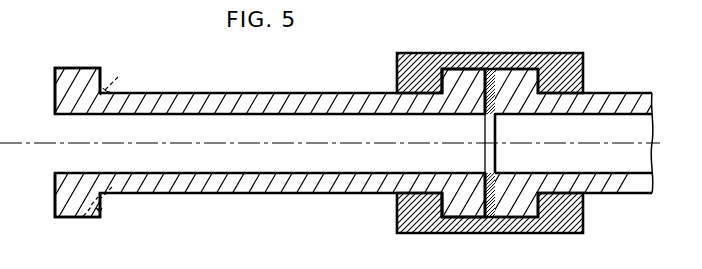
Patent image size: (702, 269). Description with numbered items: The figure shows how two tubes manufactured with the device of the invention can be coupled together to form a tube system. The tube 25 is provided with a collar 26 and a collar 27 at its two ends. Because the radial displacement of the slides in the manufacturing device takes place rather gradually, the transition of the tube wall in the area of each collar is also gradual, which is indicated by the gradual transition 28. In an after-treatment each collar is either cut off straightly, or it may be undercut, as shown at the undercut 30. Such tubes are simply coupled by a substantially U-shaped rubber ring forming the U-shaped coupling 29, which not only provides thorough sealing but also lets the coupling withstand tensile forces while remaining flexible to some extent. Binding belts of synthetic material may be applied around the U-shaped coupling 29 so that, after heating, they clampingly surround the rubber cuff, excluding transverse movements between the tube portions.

The tube 25 is at (201, 103).
The collar 26 is at (80, 77).
The collar 27 is at (466, 83).
The gradual transition 28 is at (118, 77).
The U-shaped coupling 29 is at (561, 72).
The undercut 30 is at (83, 218).